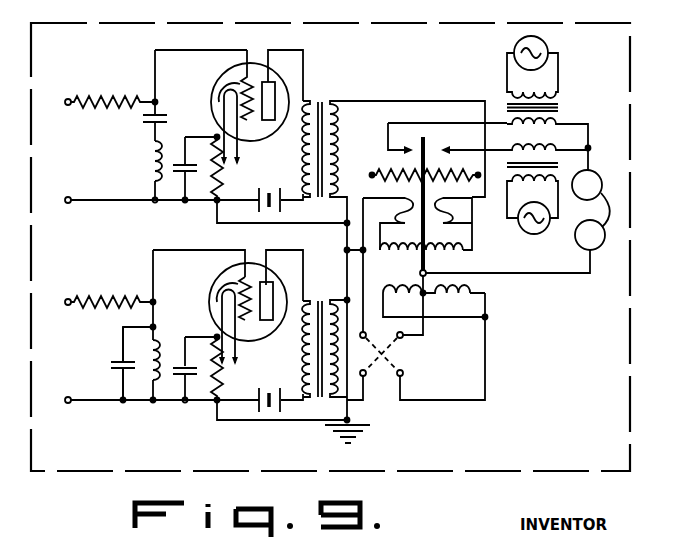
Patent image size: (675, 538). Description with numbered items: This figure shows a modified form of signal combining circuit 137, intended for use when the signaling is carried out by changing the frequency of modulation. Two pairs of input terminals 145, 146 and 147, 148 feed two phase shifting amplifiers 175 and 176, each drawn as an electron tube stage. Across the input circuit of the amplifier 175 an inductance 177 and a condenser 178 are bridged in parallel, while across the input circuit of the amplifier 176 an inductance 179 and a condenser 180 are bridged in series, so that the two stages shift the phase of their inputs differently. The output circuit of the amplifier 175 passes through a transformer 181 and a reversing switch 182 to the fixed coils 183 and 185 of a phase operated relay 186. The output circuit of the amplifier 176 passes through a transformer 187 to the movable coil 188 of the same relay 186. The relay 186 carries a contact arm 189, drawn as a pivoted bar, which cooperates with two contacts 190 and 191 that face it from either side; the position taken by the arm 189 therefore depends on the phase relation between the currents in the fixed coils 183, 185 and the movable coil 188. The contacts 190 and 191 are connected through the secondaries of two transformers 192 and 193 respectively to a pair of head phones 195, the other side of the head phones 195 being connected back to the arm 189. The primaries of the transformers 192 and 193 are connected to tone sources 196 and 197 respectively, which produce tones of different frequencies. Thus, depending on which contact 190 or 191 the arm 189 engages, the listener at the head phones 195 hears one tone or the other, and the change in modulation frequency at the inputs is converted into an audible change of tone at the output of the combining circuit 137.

The signal combining circuit 137 is at (83, 475).
The input terminal 145 is at (65, 404).
The input terminal 146 is at (65, 301).
The input terminal 147 is at (66, 203).
The input terminal 148 is at (66, 99).
The phase shifting amplifier 175 is at (203, 282).
The phase shifting amplifier 176 is at (203, 87).
The inductance 177 is at (160, 347).
The condenser 178 is at (109, 366).
The inductance 179 is at (150, 162).
The condenser 180 is at (164, 118).
The transformer 181 is at (321, 304).
The reversing switch 182 is at (389, 353).
The fixed coil 183 is at (406, 300).
The fixed coil 185 is at (476, 296).
The phase operated relay 186 is at (402, 285).
The transformer 187 is at (319, 103).
The movable coil 188 is at (393, 245).
The contact arm 189 is at (427, 212).
The contact 190 is at (442, 151).
The contact 191 is at (404, 153).
The transformer 192 is at (504, 162).
The transformer 193 is at (558, 107).
The head phones 195 is at (597, 251).
The tone source 196 is at (519, 230).
The tone source 197 is at (549, 48).